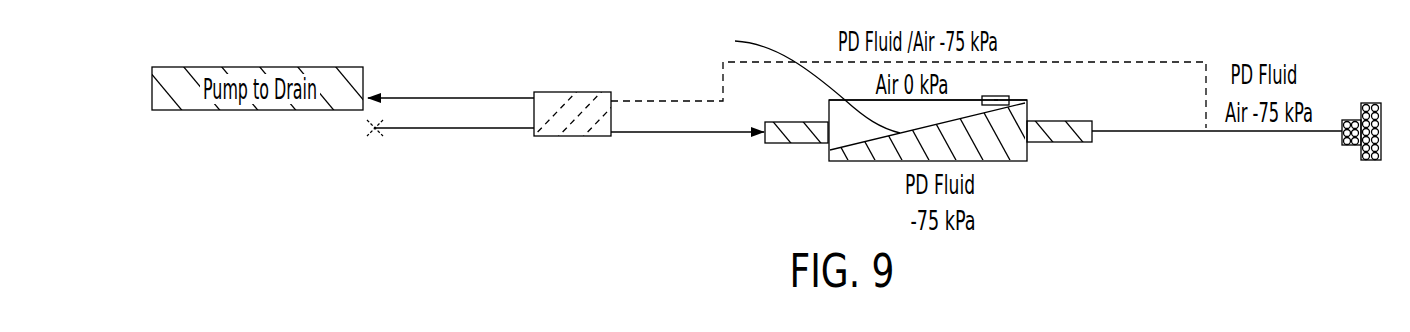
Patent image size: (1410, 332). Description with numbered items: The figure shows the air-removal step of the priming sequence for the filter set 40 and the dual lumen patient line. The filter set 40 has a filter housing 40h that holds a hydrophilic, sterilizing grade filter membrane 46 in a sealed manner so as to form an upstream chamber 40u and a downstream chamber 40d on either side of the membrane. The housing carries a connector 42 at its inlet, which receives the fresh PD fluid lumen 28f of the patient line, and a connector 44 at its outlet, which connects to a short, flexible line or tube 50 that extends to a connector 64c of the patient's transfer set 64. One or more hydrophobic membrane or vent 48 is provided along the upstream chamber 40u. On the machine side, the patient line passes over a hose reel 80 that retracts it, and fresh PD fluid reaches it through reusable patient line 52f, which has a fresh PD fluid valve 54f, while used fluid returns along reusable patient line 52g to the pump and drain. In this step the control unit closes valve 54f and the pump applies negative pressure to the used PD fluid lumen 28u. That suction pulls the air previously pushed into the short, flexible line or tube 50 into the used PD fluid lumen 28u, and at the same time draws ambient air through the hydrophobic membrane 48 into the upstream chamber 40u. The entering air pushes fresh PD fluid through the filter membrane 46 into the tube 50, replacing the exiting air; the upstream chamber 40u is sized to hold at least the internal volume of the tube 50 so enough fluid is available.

The reusable patient line 52g is at (451, 96).
The reusable patient line 52f is at (458, 130).
The fresh PD fluid valve 54f is at (378, 135).
The hose reel 80 is at (575, 92).
The fresh PD fluid lumen 28f is at (683, 134).
The used PD fluid lumen 28u is at (800, 61).
The hydrophilic filter membrane 46 is at (805, 80).
The hydrophobic membrane 48 is at (1000, 96).
The upstream chamber 40u is at (842, 112).
The filter set 40 is at (898, 168).
The filter housing 40h is at (856, 163).
The downstream chamber 40d is at (999, 163).
The connector 42 is at (773, 128).
The connector 44 is at (1068, 128).
The short flexible line or tube 50 is at (1235, 133).
The transfer set connector 64c is at (1350, 120).
The patient transfer set 64 is at (1371, 103).